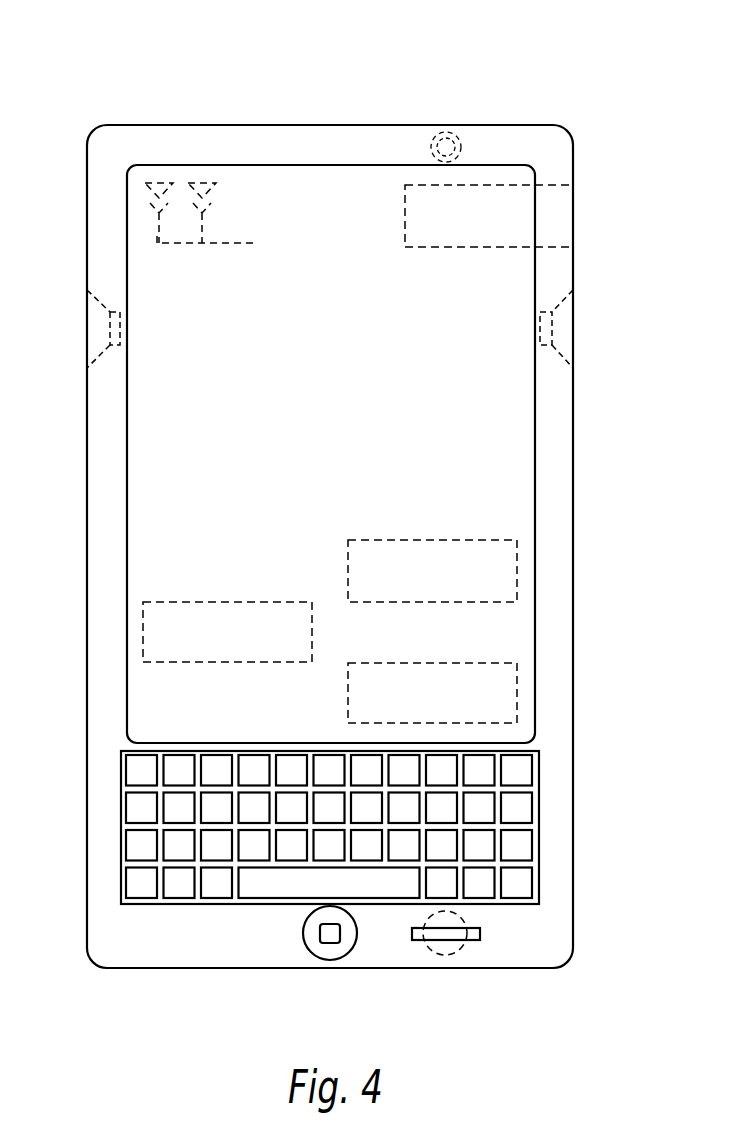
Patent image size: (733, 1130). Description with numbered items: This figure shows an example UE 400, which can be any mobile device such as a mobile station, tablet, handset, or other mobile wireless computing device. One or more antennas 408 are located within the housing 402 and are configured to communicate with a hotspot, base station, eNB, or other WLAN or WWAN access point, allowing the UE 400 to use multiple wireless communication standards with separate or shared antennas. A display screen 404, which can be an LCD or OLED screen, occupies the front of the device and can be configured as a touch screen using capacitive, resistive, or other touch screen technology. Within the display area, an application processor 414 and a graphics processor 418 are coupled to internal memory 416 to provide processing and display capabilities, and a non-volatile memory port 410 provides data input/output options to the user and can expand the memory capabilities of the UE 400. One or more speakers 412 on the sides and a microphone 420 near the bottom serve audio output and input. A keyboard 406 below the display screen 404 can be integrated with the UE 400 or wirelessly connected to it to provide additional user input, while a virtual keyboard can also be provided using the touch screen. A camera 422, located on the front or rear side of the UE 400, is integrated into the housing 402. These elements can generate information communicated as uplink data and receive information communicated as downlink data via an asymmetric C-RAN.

The UE 400 is at (620, 36).
The housing 402 is at (330, 125).
The display screen 404 is at (513, 442).
The keyboard 406 is at (539, 826).
The antennas 408 is at (202, 183).
The non-volatile memory port 410 is at (574, 216).
The speakers 412 is at (87, 328).
The application processor 414 is at (432, 538).
The internal memory 416 is at (432, 660).
The graphics processor 418 is at (227, 600).
The microphone 420 is at (445, 955).
The camera 422 is at (458, 135).